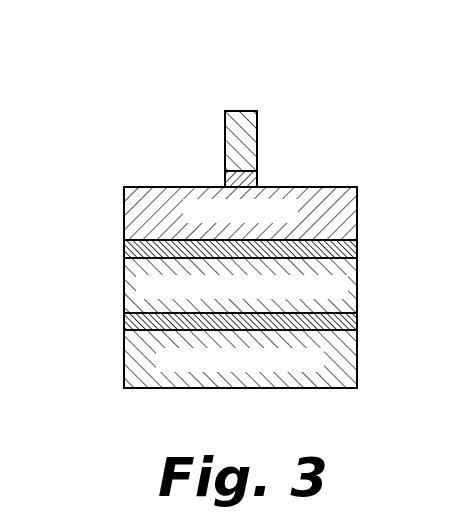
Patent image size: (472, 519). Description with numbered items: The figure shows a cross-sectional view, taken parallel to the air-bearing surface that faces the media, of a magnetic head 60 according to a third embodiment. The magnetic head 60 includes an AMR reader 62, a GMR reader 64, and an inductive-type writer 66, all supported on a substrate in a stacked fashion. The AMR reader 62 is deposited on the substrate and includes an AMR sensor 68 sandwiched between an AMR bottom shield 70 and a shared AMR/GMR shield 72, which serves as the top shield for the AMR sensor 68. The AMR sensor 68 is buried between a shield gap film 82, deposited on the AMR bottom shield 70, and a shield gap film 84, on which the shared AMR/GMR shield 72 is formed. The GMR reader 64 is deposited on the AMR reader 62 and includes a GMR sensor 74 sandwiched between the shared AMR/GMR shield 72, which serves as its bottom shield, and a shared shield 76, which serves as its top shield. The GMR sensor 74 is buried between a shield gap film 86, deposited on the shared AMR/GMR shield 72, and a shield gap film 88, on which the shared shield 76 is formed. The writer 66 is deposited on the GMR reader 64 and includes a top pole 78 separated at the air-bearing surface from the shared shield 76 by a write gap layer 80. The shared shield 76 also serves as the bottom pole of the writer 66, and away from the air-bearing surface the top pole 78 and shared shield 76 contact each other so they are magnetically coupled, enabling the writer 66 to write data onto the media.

The magnetic head 60 is at (353, 70).
The AMR reader 62 is at (98, 260).
The GMR reader 64 is at (80, 187).
The inductive-type writer 66 is at (57, 110).
The AMR sensor 68 is at (240, 322).
The AMR bottom shield 70 is at (357, 360).
The shared AMR/GMR shield 72 is at (357, 288).
The GMR sensor 74 is at (245, 248).
The shared shield 76 is at (357, 210).
The top pole 78 is at (257, 137).
The write gap layer 80 is at (257, 178).
The shield gap film 82 is at (357, 321).
The shield gap film 84 is at (240, 321).
The shield gap film 86 is at (357, 248).
The shield gap film 88 is at (240, 249).